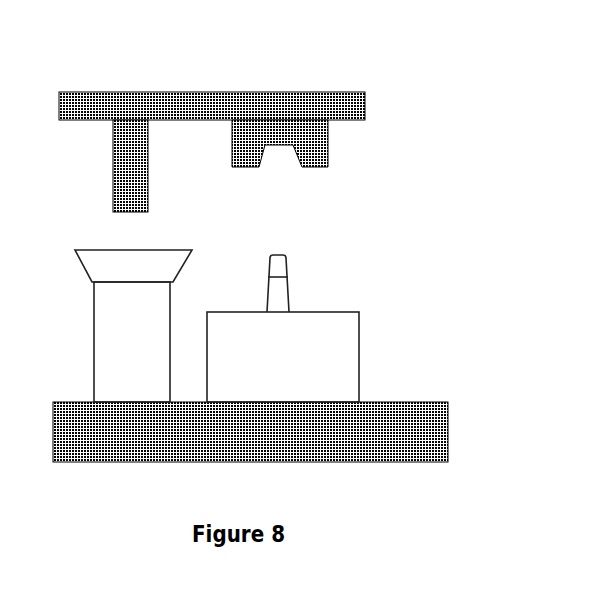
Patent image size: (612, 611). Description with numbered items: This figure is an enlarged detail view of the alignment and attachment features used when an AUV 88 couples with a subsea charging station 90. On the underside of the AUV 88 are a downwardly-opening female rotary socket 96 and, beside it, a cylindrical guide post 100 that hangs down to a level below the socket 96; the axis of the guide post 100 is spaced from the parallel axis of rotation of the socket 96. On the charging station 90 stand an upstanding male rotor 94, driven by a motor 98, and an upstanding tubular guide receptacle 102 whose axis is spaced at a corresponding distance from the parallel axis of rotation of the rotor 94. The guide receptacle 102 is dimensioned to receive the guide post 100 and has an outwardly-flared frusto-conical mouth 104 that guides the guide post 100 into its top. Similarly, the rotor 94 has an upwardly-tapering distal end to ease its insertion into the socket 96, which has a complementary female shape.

The AUV 88 is at (123, 105).
The guide post 100 is at (126, 152).
The female rotary socket 96 is at (315, 143).
The subsea charging station 90 is at (398, 375).
The frusto-conical mouth 104 is at (104, 263).
The guide receptacle 102 is at (149, 356).
The motor 98 is at (290, 361).
The male rotor 94 is at (280, 288).